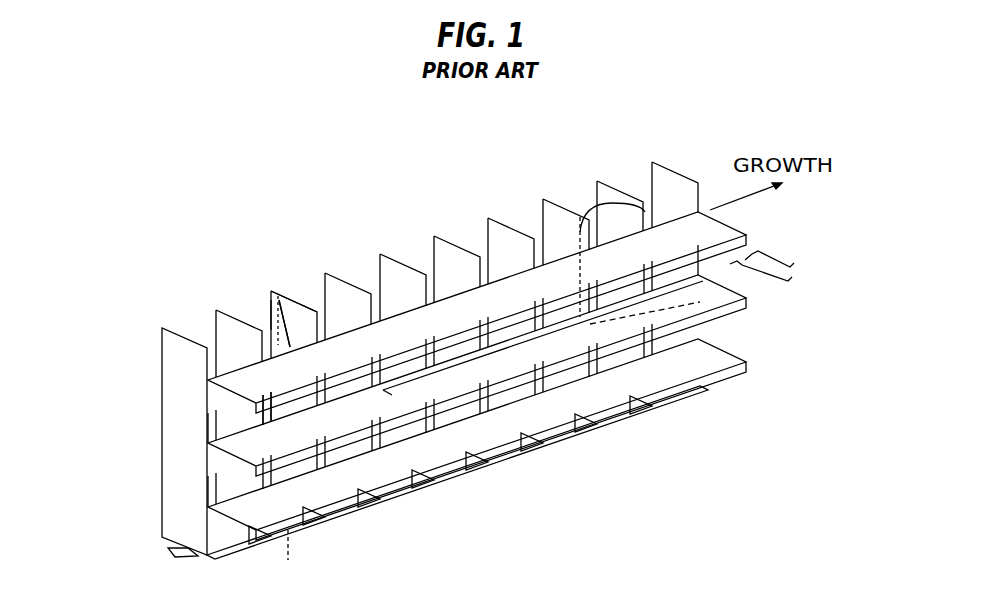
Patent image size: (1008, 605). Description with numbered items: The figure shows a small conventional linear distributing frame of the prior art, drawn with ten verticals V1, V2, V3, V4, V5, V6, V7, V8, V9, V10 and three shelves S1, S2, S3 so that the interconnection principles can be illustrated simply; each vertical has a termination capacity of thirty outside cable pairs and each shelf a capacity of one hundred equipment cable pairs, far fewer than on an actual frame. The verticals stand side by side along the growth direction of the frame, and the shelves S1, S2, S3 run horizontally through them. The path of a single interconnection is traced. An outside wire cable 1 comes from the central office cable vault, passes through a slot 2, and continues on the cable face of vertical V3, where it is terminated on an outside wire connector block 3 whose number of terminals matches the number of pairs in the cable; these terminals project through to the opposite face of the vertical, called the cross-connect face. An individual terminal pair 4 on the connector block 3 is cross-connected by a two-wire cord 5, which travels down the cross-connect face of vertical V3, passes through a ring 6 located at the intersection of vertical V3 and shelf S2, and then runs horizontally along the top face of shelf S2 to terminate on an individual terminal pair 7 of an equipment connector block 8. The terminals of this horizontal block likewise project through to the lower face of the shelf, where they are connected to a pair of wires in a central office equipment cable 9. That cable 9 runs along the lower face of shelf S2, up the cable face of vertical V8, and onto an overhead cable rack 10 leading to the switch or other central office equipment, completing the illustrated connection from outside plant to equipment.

The outside wire cable 1 is at (290, 541).
The slot 2 is at (222, 548).
The outside wire connector block 3 is at (272, 294).
The terminal pair 4 is at (273, 312).
The two-wire cord 5 is at (290, 333).
The ring 6 is at (307, 383).
The terminal pair 7 is at (736, 300).
The equipment connector block 8 is at (704, 305).
The central office equipment cable 9 is at (796, 278).
The overhead cable rack 10 is at (786, 260).
The shelf S1 is at (746, 361).
The shelf S2 is at (746, 298).
The shelf S3 is at (742, 234).
The vertical V1 is at (171, 428).
The vertical V2 is at (224, 395).
The vertical V3 is at (280, 405).
The vertical V4 is at (332, 387).
The vertical V5 is at (386, 369).
The vertical V6 is at (442, 350).
The vertical V7 is at (495, 331).
The vertical V8 is at (550, 312).
The vertical V9 is at (606, 294).
The vertical V10 is at (660, 275).